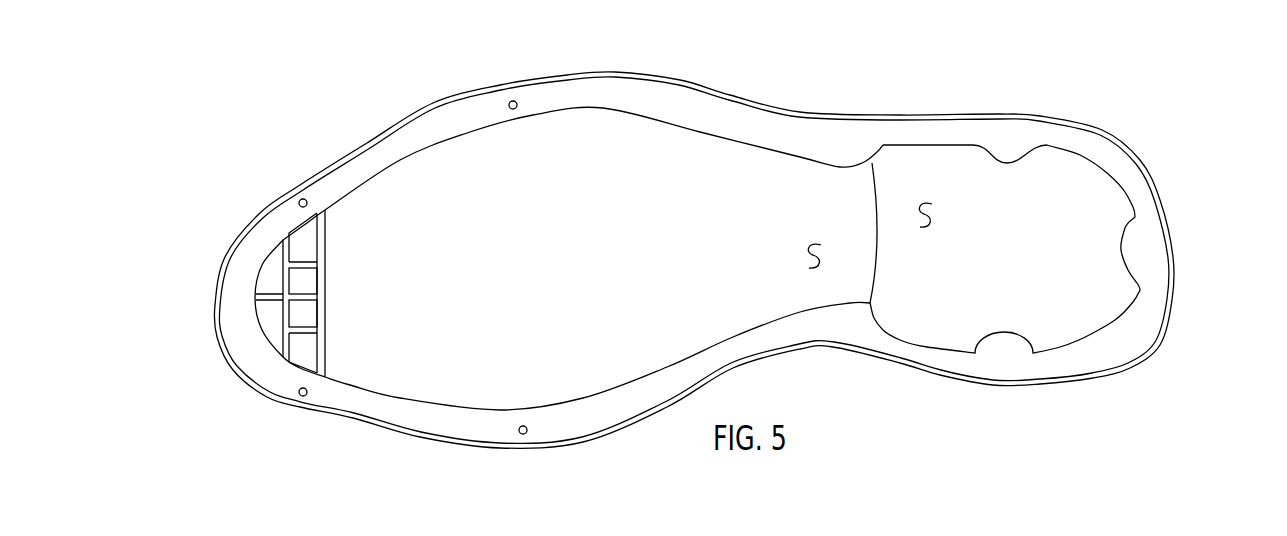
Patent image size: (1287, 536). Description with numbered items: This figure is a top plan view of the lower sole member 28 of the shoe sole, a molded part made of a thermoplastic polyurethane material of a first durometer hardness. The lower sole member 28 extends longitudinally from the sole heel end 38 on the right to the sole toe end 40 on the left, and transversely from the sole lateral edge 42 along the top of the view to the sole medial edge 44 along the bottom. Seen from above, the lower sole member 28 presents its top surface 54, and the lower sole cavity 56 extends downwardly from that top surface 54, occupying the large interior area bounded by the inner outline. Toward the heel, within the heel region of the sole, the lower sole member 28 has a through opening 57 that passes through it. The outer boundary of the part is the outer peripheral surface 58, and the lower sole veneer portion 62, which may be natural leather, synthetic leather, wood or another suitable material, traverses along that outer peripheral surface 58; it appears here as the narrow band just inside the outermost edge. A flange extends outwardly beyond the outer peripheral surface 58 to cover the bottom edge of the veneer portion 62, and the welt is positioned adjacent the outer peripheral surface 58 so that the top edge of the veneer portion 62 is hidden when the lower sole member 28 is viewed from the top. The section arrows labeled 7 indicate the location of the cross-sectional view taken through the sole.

The section line 7- 7 is at (583, 460).
The lower sole member 28 is at (1152, 87).
The sole heel end 38 is at (1177, 247).
The sole toe end 40 is at (213, 309).
The sole lateral edge 42 is at (867, 112).
The sole medial edge 44 is at (637, 426).
The top surface 54 is at (578, 98).
The lower sole cavity 56 is at (806, 257).
The through opening 57 is at (934, 216).
The outer peripheral surface 58 is at (698, 93).
The lower sole veneer portion 62 is at (920, 372).